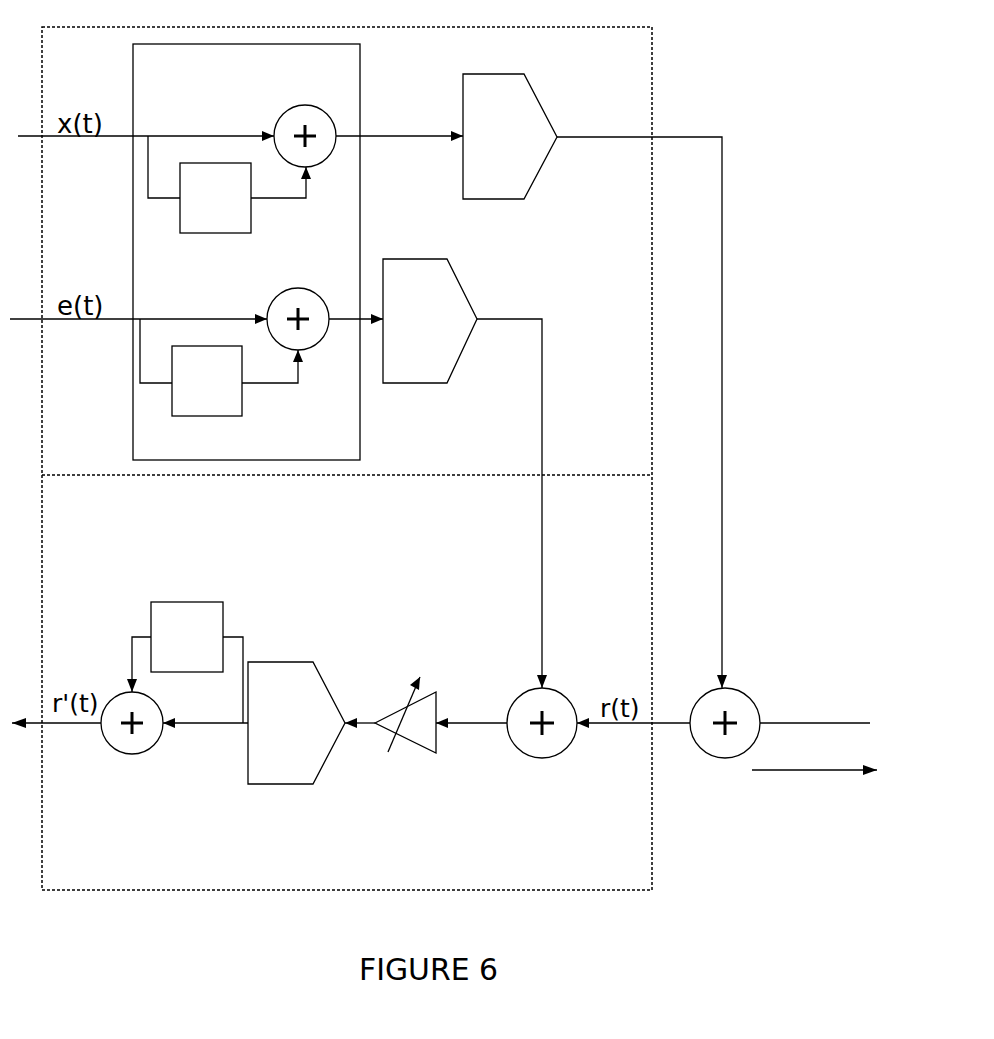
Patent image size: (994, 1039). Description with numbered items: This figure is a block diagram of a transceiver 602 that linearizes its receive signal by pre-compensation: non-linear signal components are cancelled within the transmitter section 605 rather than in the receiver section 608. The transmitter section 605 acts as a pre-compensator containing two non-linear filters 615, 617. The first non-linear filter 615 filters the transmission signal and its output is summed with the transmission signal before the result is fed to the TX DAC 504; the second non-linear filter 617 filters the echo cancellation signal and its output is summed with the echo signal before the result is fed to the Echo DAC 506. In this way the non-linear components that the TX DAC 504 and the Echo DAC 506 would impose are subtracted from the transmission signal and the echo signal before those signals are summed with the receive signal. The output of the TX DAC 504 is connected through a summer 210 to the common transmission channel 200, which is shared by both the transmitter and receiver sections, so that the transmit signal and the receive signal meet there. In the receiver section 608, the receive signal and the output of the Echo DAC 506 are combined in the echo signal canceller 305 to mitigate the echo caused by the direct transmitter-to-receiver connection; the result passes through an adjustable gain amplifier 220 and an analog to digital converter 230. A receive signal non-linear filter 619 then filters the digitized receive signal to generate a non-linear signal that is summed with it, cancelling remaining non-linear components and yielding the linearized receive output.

The transceiver 602 is at (119, 72).
The transmitter section (pre-compensator) 605 is at (214, 72).
The receiver section 608 is at (440, 521).
The non-linear filter 615 is at (196, 217).
The non-linear filter 617 is at (188, 400).
The receive signal non-linear filter 619 is at (168, 656).
The TX DAC 504 is at (476, 170).
The Echo DAC 506 is at (406, 357).
The analog to digital converter (ADC) 230 is at (280, 753).
The adjustable gain amplifier 220 is at (420, 738).
The echo signal canceller 305 is at (543, 742).
The summer 210 is at (715, 742).
The transmission channel 200 is at (757, 668).